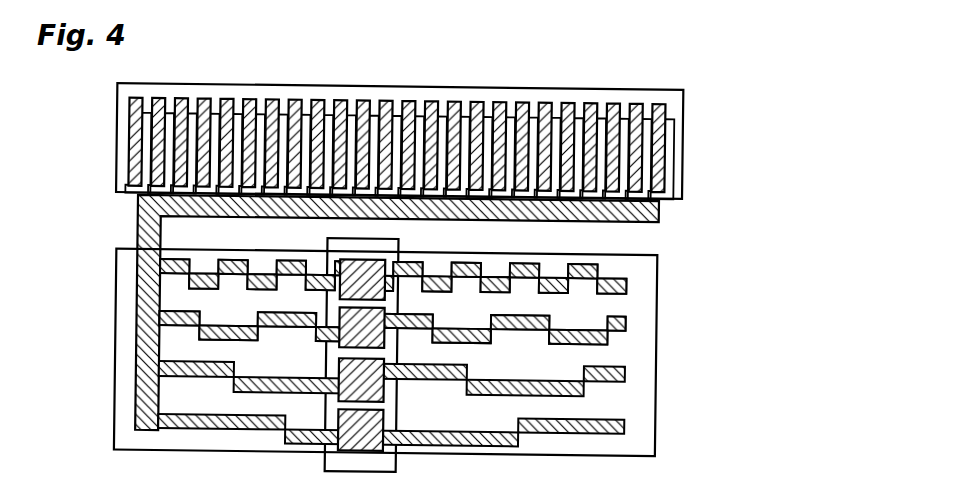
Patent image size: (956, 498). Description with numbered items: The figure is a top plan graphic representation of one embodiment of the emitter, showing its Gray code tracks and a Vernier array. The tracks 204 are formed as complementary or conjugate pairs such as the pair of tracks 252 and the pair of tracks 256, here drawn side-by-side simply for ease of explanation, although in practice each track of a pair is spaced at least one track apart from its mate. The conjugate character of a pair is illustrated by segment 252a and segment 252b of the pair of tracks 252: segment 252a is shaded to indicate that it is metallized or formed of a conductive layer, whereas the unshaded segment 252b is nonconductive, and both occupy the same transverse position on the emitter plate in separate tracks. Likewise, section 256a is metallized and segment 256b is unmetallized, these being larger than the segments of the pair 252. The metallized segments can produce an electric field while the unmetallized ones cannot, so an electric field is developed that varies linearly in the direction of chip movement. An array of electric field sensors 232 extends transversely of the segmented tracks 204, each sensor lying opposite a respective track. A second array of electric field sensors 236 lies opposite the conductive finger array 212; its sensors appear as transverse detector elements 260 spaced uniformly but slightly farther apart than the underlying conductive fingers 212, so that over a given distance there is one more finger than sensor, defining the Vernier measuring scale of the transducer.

The tracks 204 is at (663, 328).
The conductive finger array 212 is at (442, 118).
The array of electric field sensors 232 is at (372, 237).
The second array of electric field sensors 236 is at (672, 104).
The pair of tracks 252 is at (633, 275).
The segment 252a is at (222, 259).
The segment 252b is at (230, 283).
The pair of tracks 256 is at (624, 340).
The section 256a is at (177, 314).
The segment 256b is at (178, 333).
The transverse detector elements 260 is at (253, 100).